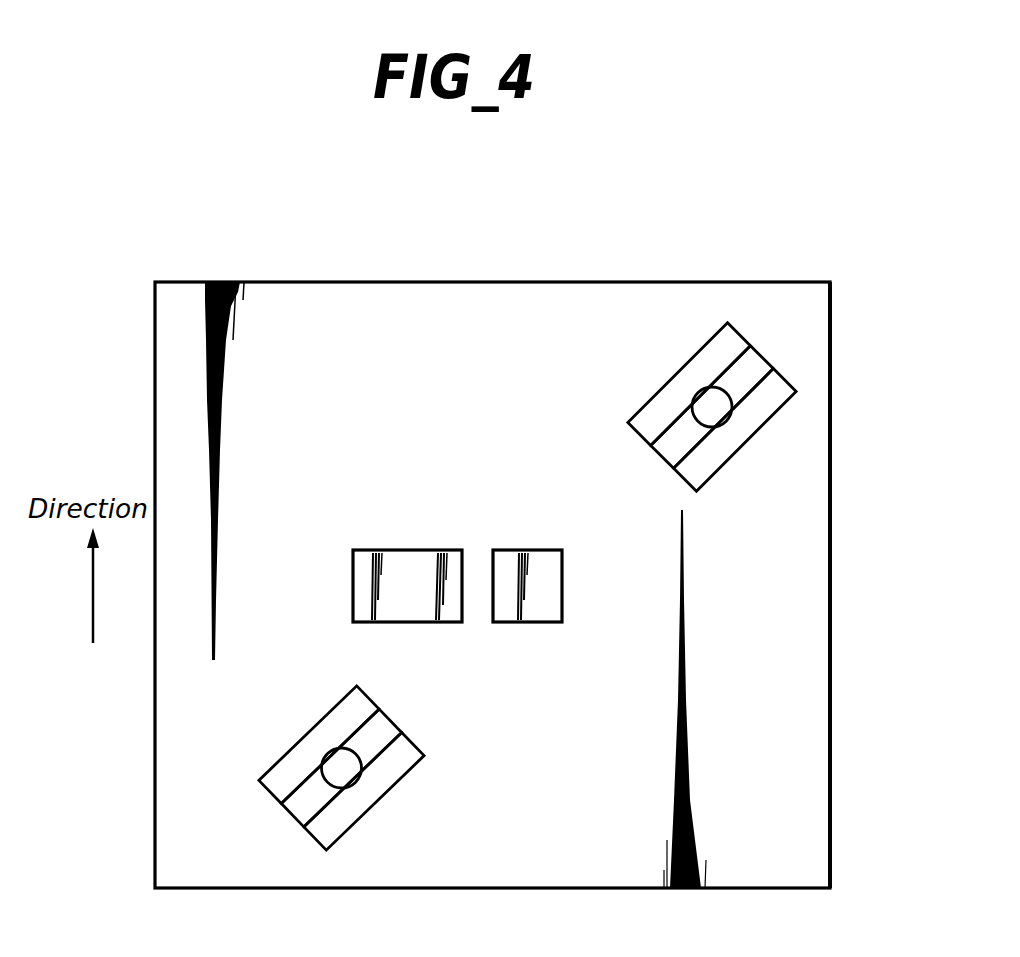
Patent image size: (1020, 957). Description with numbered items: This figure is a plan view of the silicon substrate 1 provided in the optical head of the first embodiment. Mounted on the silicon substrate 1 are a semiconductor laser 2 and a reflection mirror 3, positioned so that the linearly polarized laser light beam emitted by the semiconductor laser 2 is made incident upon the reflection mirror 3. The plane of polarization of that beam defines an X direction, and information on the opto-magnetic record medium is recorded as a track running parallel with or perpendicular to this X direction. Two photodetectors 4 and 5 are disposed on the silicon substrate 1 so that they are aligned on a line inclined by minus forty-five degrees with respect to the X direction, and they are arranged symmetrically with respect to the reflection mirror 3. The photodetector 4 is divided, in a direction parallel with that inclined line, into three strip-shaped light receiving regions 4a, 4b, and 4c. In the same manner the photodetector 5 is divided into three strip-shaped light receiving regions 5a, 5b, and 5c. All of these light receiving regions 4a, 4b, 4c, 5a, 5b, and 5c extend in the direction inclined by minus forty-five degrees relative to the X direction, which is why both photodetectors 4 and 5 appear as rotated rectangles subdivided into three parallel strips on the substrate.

The silicon substrate 1 is at (538, 888).
The semiconductor laser 2 is at (403, 550).
The reflection mirror 3 is at (538, 550).
The photodetector 4 is at (282, 761).
The light receiving region 4a is at (298, 750).
The light receiving region 4b is at (302, 813).
The light receiving region 4c is at (348, 828).
The photodetector 5 is at (745, 362).
The light receiving region 5a is at (690, 368).
The light receiving region 5b is at (763, 365).
The light receiving region 5c is at (768, 408).